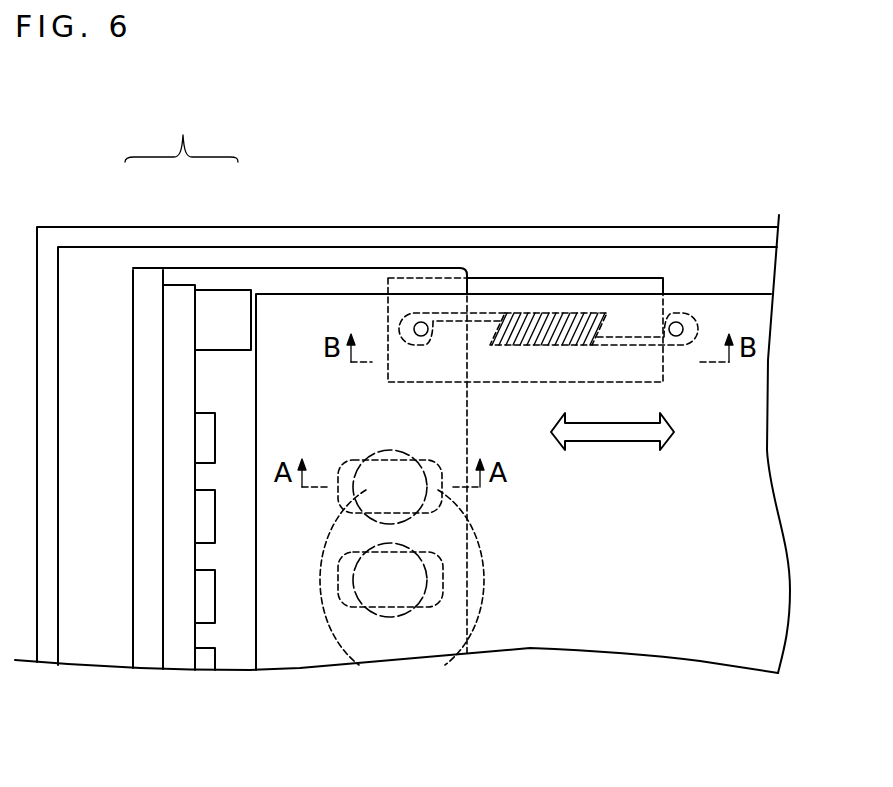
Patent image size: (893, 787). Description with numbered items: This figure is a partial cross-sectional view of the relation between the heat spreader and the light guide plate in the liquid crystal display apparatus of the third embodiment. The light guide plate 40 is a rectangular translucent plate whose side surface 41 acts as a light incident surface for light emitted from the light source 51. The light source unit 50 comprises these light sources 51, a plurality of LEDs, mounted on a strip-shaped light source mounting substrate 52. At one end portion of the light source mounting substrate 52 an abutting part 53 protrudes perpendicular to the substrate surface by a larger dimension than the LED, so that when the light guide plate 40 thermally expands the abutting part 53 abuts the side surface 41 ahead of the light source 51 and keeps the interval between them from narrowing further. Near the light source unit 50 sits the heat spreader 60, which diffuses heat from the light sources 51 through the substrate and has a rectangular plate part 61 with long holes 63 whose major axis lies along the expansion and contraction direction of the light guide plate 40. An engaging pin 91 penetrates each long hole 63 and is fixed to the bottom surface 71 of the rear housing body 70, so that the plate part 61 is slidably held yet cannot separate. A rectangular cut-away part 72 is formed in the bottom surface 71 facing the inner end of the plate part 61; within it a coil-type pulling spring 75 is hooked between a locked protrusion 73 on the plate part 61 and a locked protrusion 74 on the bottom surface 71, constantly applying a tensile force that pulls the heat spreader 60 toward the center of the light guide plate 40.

The light guide plate 40 is at (713, 293).
The side surface 41 is at (257, 590).
The light source unit 50 is at (181, 133).
The light source 51 is at (203, 420).
The light source mounting substrate 52 is at (180, 292).
The abutting part 53 is at (230, 297).
The heat spreader 60 is at (148, 270).
The plate part 61 is at (302, 268).
The long hole 63 is at (460, 650).
The rear housing body 70 is at (350, 227).
The bottom surface 71 is at (690, 263).
The cut-away part 72 is at (593, 277).
The locked protrusion 73 is at (428, 322).
The locked protrusion 74 is at (667, 328).
The pulling spring 75 is at (550, 313).
The engaging pin 91 is at (392, 617).